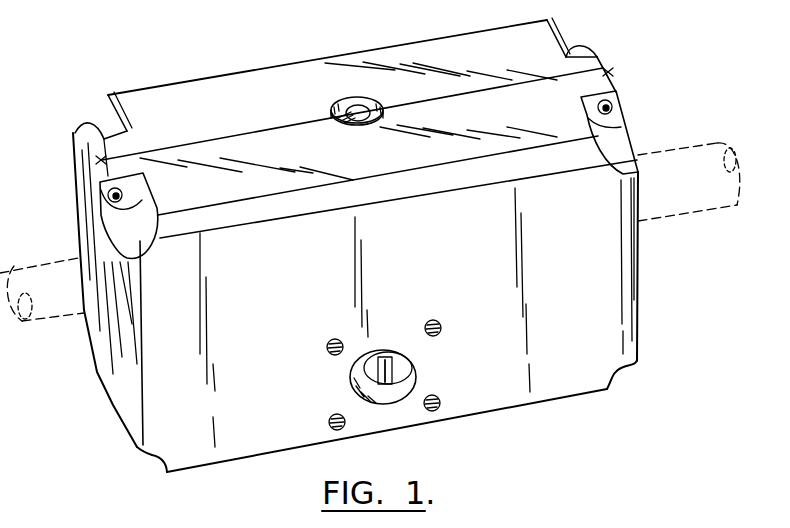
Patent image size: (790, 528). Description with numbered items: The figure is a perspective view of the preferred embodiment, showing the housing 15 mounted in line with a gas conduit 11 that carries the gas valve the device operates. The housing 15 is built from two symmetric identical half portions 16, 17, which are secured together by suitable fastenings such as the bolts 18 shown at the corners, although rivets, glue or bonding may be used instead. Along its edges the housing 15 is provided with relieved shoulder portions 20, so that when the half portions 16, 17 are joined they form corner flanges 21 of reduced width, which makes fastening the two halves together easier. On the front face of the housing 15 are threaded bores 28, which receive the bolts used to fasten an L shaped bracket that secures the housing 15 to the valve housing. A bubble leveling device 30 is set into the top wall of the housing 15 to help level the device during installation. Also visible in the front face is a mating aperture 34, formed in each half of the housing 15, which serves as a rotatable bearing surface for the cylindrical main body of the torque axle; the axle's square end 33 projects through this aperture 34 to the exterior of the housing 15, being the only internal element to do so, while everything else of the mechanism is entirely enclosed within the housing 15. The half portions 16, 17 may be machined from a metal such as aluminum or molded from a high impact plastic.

The gas conduit 11 is at (697, 147).
The housing 15 is at (112, 448).
The half portion 16 is at (434, 56).
The half portion 17 is at (582, 375).
The bolts 18 is at (112, 197).
The relieved shoulder portions 20 is at (98, 120).
The corner flanges 21 is at (101, 160).
The threaded bores 28 is at (338, 340).
The bubble leveling device 30 is at (340, 102).
The square end 33 is at (388, 385).
The mating aperture 34 is at (402, 348).